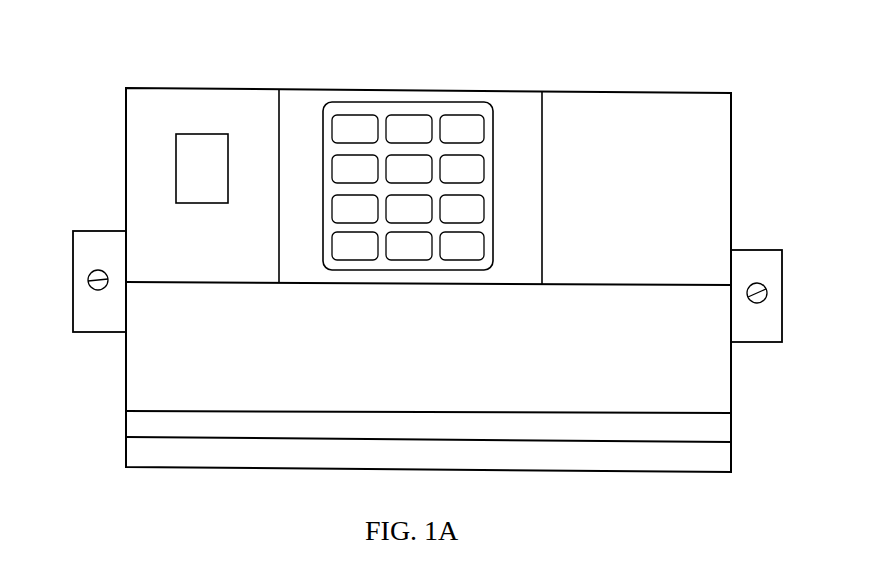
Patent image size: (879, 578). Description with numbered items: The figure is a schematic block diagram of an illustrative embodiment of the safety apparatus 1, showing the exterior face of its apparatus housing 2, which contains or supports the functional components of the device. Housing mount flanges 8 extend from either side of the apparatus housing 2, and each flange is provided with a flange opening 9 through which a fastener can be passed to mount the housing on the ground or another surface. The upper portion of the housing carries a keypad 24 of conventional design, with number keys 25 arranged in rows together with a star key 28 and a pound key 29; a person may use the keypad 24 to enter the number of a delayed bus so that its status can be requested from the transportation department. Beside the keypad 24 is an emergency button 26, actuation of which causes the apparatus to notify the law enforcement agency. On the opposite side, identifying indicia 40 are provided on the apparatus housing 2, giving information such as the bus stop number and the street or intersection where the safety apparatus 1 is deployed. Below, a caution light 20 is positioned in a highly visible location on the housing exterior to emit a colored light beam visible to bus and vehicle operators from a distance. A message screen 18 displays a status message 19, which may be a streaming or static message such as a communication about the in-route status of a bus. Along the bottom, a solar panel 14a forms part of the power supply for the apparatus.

The safety apparatus 1 is at (428, 245).
The apparatus housing 2 is at (110, 148).
The housing mount flanges 8 is at (83, 308).
The flange opening 9 is at (98, 281).
The solar panel 14a is at (387, 454).
The message screen 18 is at (140, 420).
The status message 19 is at (322, 420).
The caution light 20 is at (140, 382).
The keypad 24 is at (408, 187).
The number keys 25 is at (425, 120).
The emergency button 26 is at (196, 162).
The star key 28 is at (357, 255).
The pound key 29 is at (468, 250).
The identifying indicia 40 is at (683, 173).